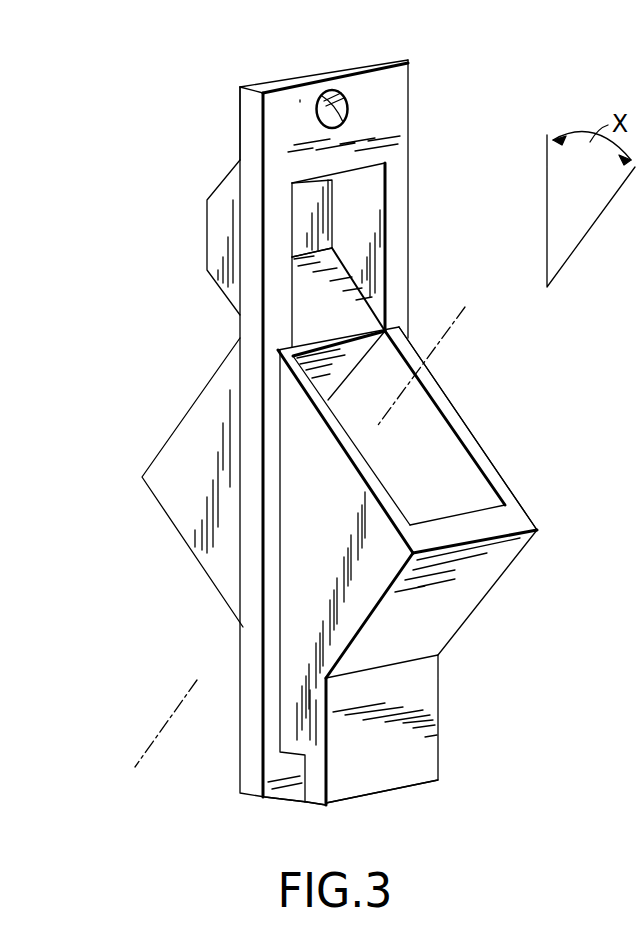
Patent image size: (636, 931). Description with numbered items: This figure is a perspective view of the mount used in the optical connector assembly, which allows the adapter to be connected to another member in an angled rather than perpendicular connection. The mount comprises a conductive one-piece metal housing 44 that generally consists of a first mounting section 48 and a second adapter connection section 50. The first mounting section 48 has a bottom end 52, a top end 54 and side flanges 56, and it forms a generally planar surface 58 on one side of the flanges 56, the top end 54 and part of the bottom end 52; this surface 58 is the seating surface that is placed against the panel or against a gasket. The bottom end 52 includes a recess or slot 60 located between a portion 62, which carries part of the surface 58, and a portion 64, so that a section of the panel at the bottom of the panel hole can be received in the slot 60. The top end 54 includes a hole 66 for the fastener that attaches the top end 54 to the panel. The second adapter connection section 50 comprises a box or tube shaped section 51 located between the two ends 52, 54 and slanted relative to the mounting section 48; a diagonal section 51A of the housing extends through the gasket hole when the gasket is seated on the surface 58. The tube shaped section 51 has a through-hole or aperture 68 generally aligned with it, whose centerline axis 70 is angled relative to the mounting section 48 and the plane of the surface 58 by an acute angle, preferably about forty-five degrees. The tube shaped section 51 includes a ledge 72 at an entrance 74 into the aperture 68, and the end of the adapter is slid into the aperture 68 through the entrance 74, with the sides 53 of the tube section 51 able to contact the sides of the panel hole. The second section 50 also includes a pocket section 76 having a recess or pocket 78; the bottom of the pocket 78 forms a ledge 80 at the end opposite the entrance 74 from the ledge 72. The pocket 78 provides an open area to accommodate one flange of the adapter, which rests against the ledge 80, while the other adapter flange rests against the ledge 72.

The housing 44 is at (372, 62).
The first mounting section 48 is at (433, 722).
The second adapter connection section 50 is at (478, 441).
The tube shaped section 51 is at (497, 563).
The diagonal section 51A is at (353, 578).
The bottom end 52 is at (382, 788).
The sides 53 is at (305, 635).
The top end 54 is at (277, 91).
The side flanges 56 is at (410, 243).
The planar surface 58 is at (402, 137).
The slot 60 is at (292, 787).
The portion 62 is at (250, 783).
The portion 64 is at (345, 795).
The hole 66 is at (323, 103).
The aperture 68 is at (405, 418).
The centerline axis 70 is at (445, 338).
The ledge 72 is at (508, 520).
The entrance 74 is at (500, 478).
The pocket section 76 is at (216, 245).
The pocket 78 is at (356, 218).
The ledge 80 is at (300, 307).